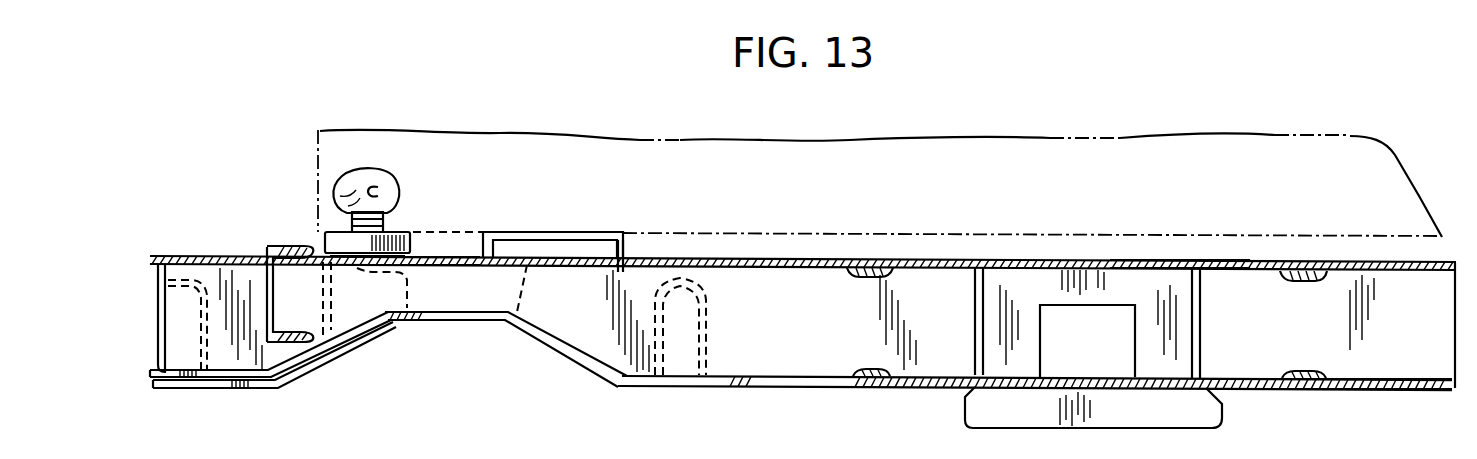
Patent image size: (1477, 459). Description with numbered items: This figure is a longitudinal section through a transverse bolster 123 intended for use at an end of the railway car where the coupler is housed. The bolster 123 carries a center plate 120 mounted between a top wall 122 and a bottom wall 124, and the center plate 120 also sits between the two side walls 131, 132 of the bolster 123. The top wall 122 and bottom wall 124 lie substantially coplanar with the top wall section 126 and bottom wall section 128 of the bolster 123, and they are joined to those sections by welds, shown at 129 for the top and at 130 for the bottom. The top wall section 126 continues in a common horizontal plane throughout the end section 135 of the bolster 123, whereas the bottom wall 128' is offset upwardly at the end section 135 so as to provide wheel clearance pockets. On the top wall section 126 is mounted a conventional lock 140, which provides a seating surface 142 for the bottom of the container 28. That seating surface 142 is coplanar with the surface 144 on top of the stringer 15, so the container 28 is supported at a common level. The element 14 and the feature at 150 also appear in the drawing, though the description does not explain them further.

The channel member 14 is at (267, 247).
The stringer 15 is at (593, 233).
The container 28 is at (793, 170).
The center plate 120 is at (1092, 270).
The top wall 122 is at (1165, 253).
The bolster 123 is at (295, 407).
The bottom wall 124 is at (1237, 382).
The top wall section 126 is at (792, 260).
The bottom wall section 128 is at (1035, 417).
The bottom wall 128' is at (507, 376).
The weld connection 129 is at (867, 263).
The weld connection 130 is at (868, 380).
The side wall 131 is at (1193, 330).
The side wall 132 is at (978, 315).
The end section 135 is at (467, 260).
The lock 140 is at (378, 187).
The seating surface 142 is at (392, 233).
The surface 144 is at (562, 232).
The weld joint 150 is at (423, 320).